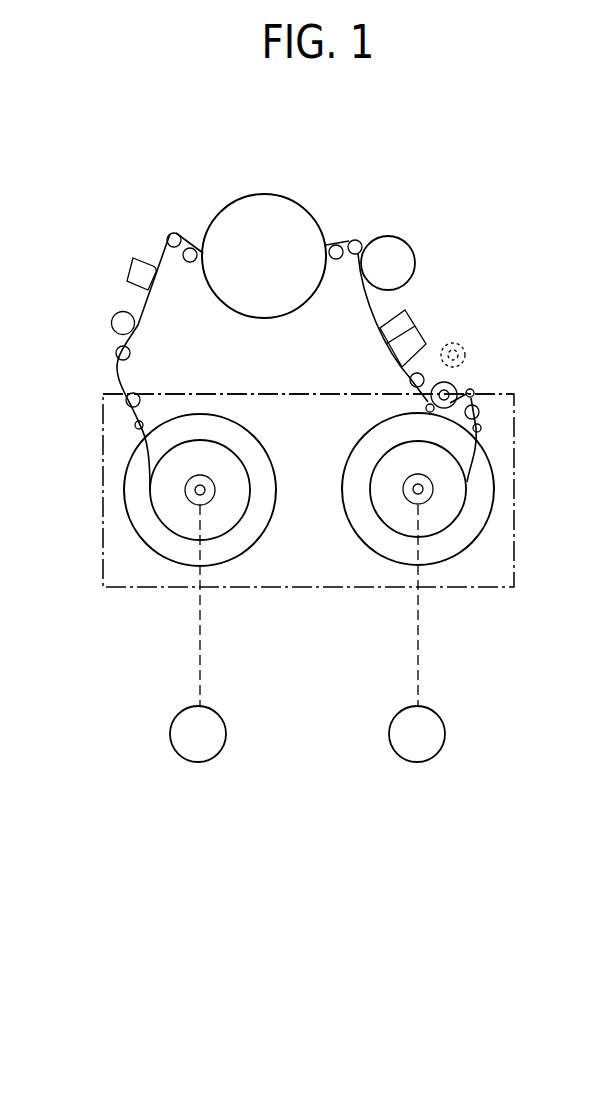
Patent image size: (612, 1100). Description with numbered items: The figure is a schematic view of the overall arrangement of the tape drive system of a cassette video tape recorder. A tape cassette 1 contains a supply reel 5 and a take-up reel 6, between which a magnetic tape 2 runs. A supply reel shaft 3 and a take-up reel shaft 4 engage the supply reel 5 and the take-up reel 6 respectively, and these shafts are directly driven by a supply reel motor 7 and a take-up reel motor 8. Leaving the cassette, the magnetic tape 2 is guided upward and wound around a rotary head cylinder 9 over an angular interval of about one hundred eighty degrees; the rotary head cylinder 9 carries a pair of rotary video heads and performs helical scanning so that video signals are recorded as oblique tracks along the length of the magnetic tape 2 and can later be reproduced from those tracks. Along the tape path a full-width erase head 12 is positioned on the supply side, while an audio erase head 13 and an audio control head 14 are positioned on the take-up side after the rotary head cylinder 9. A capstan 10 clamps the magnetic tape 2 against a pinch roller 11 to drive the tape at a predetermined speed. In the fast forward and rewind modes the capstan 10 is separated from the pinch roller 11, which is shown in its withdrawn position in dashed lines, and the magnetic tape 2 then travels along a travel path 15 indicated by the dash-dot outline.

The tape cassette 1 is at (124, 590).
The magnetic tape 2 is at (370, 316).
The supply reel shaft 3 is at (210, 482).
The take-up reel shaft 4 is at (410, 485).
The supply reel 5 is at (215, 494).
The take-up reel 6 is at (410, 505).
The supply reel motor 7 is at (226, 734).
The take-up reel motor 8 is at (445, 734).
The rotary head cylinder 9 is at (283, 194).
The capstan 10 is at (426, 408).
The pinch roller 11 is at (465, 352).
The full-width erase head 12 is at (128, 272).
The audio erase head 13 is at (400, 313).
The audio control head 14 is at (418, 336).
The travel path 15 is at (262, 393).